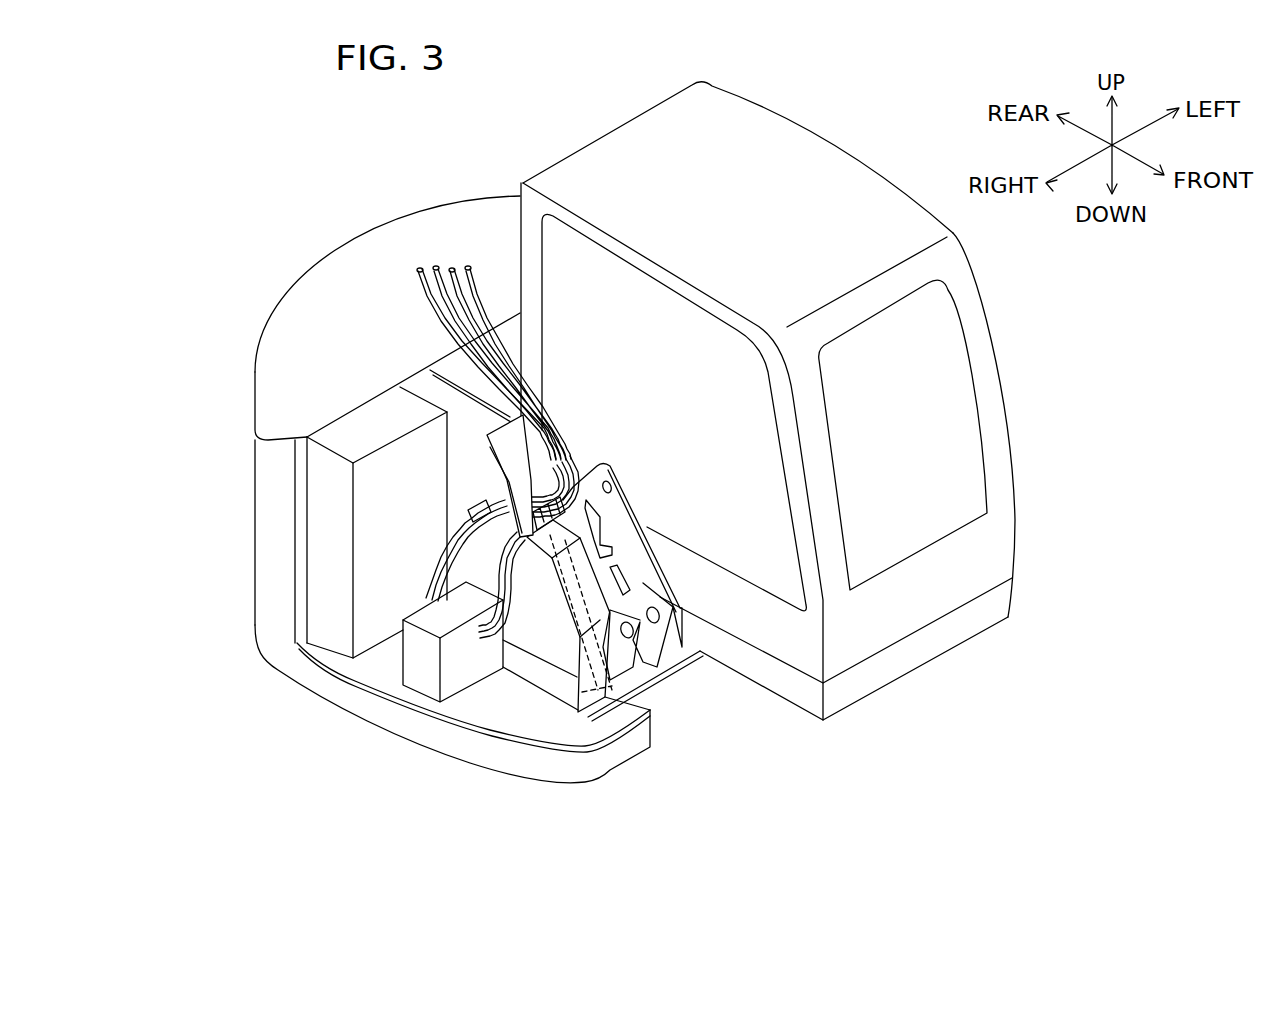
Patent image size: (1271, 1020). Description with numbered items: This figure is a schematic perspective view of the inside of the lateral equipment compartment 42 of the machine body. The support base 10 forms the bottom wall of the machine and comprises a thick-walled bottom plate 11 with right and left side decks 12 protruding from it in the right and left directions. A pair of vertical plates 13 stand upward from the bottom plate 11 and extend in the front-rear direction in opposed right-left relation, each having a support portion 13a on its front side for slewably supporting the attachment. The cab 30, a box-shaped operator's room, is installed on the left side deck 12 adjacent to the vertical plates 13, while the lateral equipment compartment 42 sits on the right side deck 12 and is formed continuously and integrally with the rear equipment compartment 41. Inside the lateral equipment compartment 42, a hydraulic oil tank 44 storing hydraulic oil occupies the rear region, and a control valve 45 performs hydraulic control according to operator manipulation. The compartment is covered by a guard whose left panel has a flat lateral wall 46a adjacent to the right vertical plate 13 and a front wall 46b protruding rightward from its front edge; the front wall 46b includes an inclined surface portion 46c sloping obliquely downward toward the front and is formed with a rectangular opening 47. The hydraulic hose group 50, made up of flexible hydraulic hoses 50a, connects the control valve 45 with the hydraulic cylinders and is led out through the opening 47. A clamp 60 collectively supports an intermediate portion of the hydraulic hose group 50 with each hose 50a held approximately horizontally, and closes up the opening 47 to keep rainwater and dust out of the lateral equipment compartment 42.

The support base 10 is at (800, 701).
The bottom plate 11 is at (672, 670).
The side deck 12 is at (620, 748).
The vertical plate 13 is at (595, 556).
The support portion 13a is at (664, 507).
The cab 30 is at (857, 158).
The rear equipment compartment 41 is at (278, 370).
The lateral equipment compartment 42 is at (319, 492).
The hydraulic oil tank 44 is at (333, 617).
The control valve 45 is at (423, 657).
The lateral wall 46a is at (467, 440).
The front wall 46b is at (609, 686).
The inclined surface portion 46c is at (517, 453).
The opening 47 is at (473, 527).
The hydraulic hose group 50 is at (466, 408).
The hydraulic hose 50a is at (420, 282).
The clamp 60 is at (649, 553).